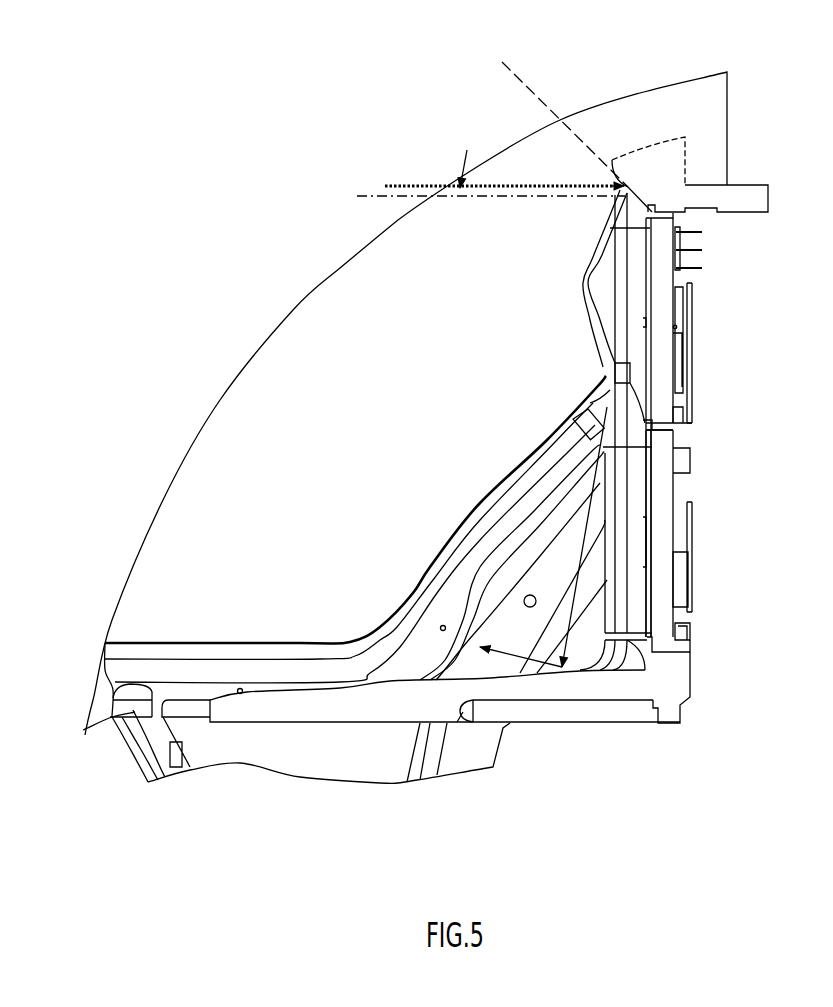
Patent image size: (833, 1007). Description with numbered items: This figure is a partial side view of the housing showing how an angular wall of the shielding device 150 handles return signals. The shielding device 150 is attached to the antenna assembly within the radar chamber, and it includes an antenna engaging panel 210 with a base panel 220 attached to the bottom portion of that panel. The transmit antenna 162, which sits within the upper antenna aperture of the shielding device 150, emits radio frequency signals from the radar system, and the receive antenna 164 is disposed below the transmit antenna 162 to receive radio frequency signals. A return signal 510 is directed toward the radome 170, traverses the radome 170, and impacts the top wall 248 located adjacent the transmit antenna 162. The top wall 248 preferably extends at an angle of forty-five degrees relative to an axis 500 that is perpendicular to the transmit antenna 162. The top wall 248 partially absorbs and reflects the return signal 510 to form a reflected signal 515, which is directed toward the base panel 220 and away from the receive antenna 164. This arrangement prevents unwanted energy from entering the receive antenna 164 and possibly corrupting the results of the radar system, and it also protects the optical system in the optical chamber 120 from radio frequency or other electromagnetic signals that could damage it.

The optical chamber 120 is at (405, 97).
The shielding device 150 is at (640, 126).
The transmit antenna 162 is at (637, 297).
The receive antenna 164 is at (640, 597).
The radome 170 is at (293, 310).
The antenna engaging panel 210 is at (672, 170).
The base panel 220 is at (617, 690).
The top wall 248 is at (641, 184).
The axis 500 is at (366, 196).
The return signal 510 is at (413, 192).
The reflected signal 515 is at (613, 320).